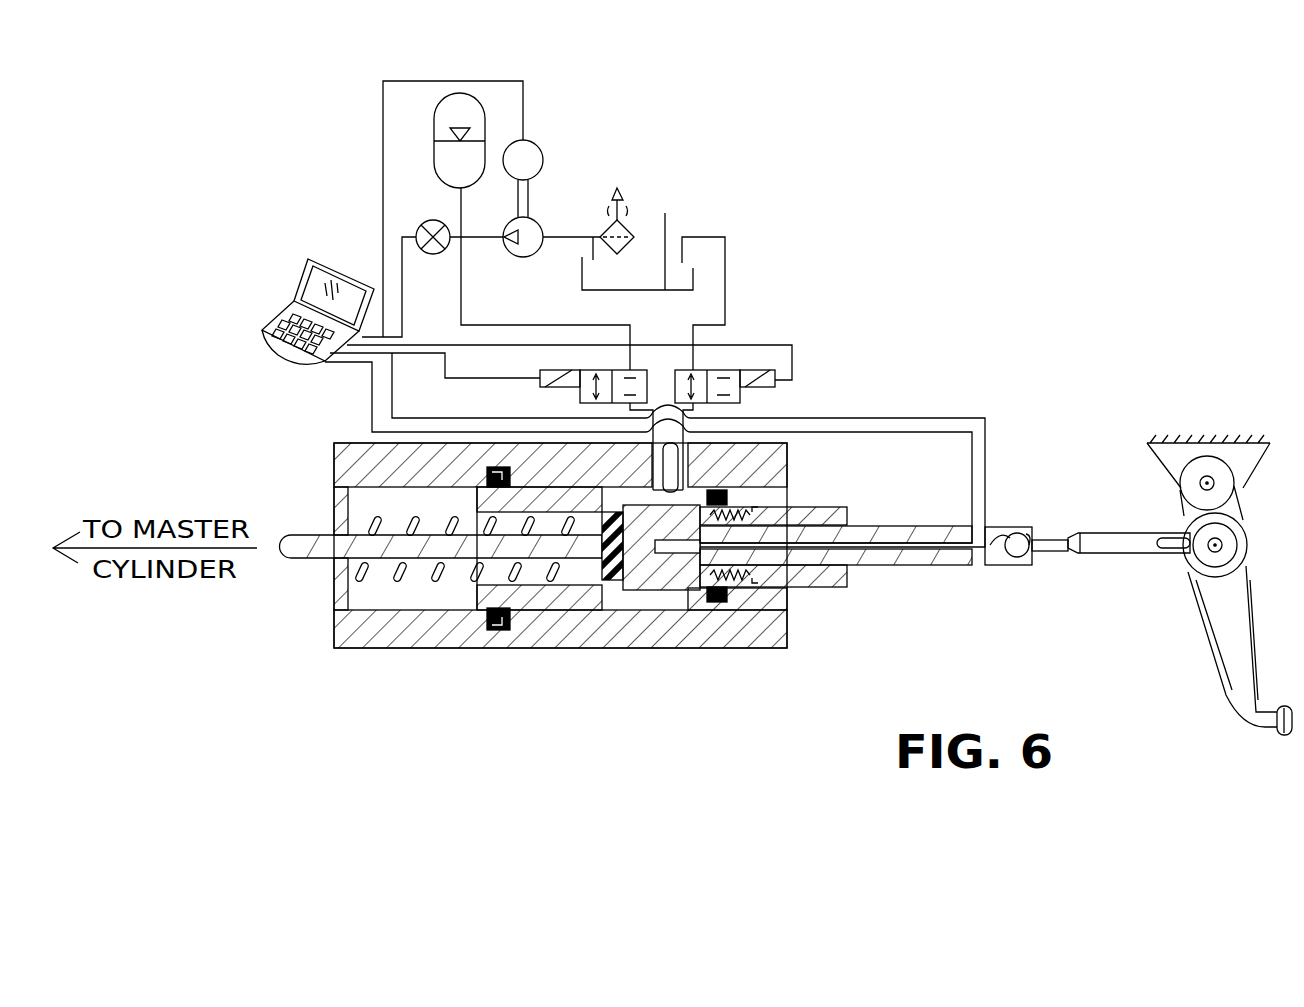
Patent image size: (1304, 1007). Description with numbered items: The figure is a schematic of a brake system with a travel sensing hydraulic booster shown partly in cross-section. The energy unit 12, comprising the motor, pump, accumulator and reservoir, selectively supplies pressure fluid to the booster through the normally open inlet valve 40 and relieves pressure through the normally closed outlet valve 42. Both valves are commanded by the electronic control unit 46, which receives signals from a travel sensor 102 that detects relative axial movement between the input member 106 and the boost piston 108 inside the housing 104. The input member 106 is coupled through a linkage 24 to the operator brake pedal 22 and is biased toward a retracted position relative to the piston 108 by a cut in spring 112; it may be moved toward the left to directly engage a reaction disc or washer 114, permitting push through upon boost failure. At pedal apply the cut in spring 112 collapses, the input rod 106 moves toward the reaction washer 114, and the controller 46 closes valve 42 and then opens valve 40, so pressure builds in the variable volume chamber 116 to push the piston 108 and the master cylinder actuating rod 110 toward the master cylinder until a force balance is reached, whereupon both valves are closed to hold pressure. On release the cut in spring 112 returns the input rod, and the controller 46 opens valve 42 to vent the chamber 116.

The energy unit 12 is at (695, 178).
The operator brake pedal 22 is at (1285, 710).
The linkage 24 is at (1097, 540).
The inlet valve 40 is at (573, 388).
The outlet valve 42 is at (740, 395).
The electronic control unit 46 is at (268, 312).
The travel sensor 102 is at (705, 490).
The housing 104 is at (338, 650).
The input member 106 is at (942, 560).
The boost piston 108 is at (533, 597).
The master cylinder actuating rod 110 is at (297, 563).
The cut in spring 112 is at (745, 580).
The reaction disc or washer 114 is at (630, 580).
The variable volume chamber 116 is at (680, 590).